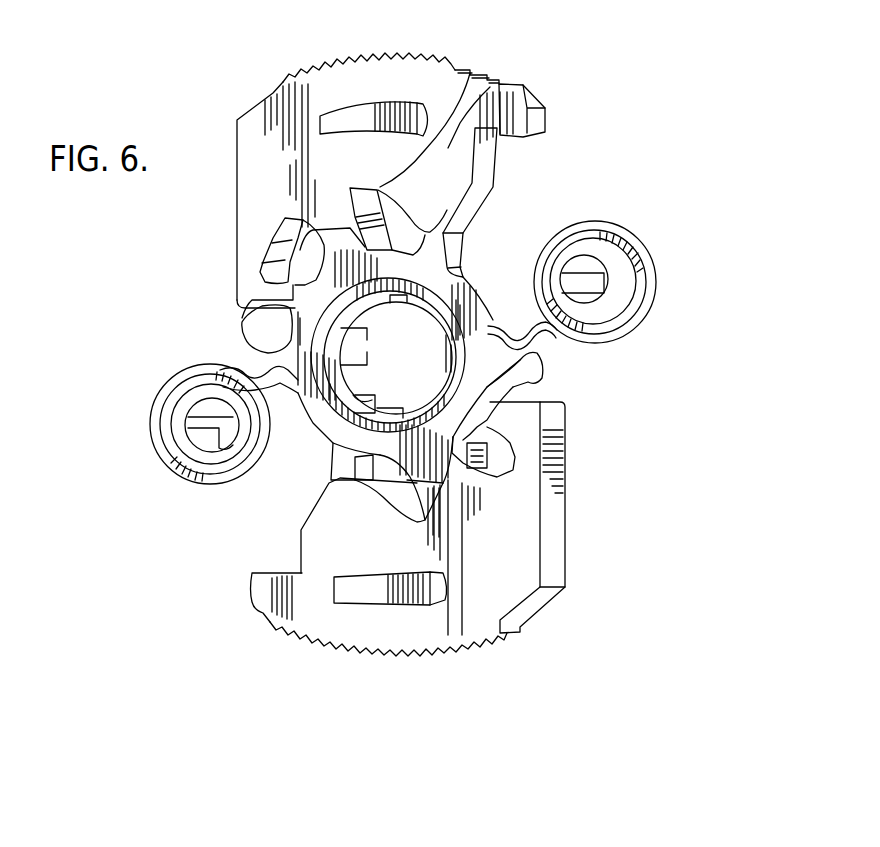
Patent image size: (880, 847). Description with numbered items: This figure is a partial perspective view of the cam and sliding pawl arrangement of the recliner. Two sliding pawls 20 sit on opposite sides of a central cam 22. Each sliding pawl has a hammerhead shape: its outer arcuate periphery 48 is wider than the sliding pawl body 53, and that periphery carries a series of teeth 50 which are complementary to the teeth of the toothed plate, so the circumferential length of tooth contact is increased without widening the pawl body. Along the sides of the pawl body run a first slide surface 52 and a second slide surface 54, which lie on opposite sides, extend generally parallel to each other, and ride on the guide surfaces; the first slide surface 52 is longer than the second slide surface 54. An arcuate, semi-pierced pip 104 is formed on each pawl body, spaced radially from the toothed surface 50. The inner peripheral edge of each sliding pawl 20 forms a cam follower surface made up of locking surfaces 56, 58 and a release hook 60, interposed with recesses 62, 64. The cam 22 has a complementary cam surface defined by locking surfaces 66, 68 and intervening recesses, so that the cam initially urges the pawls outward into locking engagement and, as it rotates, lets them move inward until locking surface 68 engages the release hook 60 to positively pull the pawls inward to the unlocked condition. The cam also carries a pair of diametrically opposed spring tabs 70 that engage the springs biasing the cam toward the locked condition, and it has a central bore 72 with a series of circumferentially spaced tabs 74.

The sliding pawl 20 is at (294, 184).
The cam 22 is at (477, 440).
The outer arcuate periphery 48 is at (545, 113).
The teeth 50 is at (320, 88).
The first slide surface 52 is at (553, 532).
The sliding pawl body 53 is at (451, 62).
The second slide surface 54 is at (490, 87).
The locking surface 56 is at (483, 198).
The locking surface 58 is at (330, 217).
The release hook 60 is at (277, 300).
The recess 62 is at (452, 66).
The recess 64 is at (257, 260).
The locking surface 66 is at (458, 226).
The locking surface 68 is at (277, 250).
The spring tab 70 is at (255, 330).
The central bore 72 is at (414, 370).
The tab 74 is at (363, 383).
The pip 104 is at (385, 100).